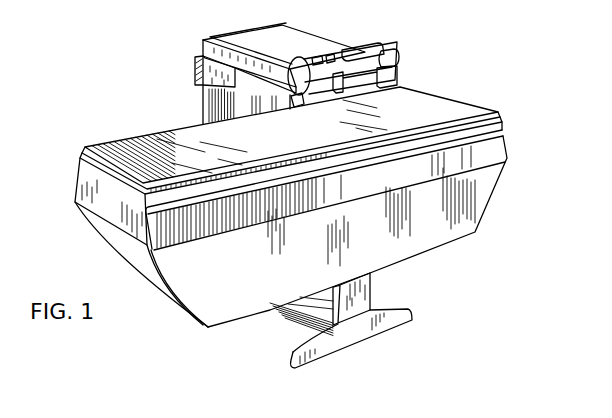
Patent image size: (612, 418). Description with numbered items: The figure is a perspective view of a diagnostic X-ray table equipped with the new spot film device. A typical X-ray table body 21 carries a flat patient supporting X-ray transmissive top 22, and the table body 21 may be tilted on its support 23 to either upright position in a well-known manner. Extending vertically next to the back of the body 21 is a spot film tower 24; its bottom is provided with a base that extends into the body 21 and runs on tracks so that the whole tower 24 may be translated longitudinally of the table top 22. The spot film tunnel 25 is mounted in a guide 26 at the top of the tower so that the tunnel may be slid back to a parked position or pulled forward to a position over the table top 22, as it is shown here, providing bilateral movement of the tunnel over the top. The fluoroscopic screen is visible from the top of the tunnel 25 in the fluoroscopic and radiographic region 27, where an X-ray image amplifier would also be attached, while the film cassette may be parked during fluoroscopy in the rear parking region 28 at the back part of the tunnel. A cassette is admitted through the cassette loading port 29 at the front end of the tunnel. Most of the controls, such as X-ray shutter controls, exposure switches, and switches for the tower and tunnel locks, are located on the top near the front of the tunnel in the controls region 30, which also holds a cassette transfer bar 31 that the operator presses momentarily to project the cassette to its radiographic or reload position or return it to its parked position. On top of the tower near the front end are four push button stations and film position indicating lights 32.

The X-ray table body 21 is at (502, 180).
The patient supporting X-ray transmissive top 22 is at (463, 103).
The support 23 is at (371, 290).
The spot film tower 24 is at (201, 100).
The spot film tunnel 25 is at (202, 42).
The guide 26 is at (194, 63).
The fluoroscopic and radiographic region 27 is at (327, 56).
The rear parking region 28 is at (297, 48).
The cassette loading port 29 is at (398, 70).
The controls region 30 is at (358, 44).
The cassette transfer bar 31 is at (383, 46).
The push button stations and film position indicating lights 32 is at (297, 100).